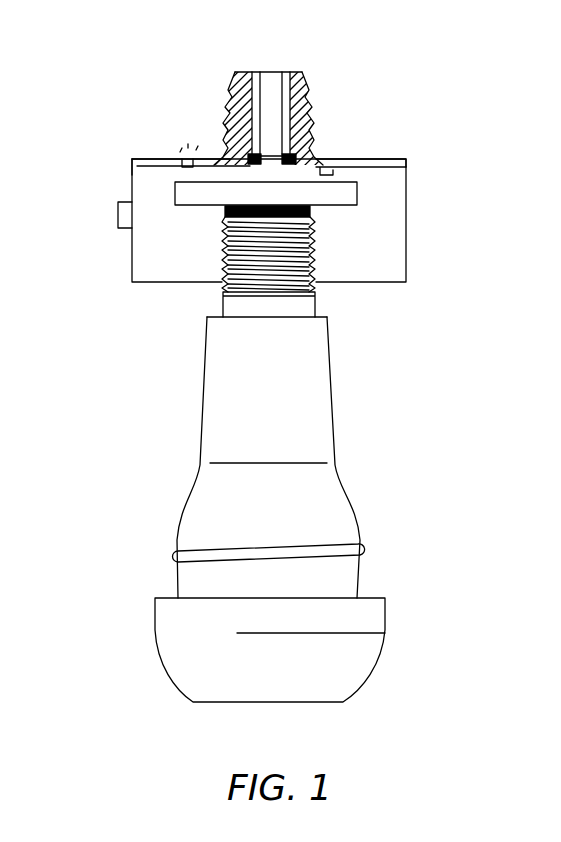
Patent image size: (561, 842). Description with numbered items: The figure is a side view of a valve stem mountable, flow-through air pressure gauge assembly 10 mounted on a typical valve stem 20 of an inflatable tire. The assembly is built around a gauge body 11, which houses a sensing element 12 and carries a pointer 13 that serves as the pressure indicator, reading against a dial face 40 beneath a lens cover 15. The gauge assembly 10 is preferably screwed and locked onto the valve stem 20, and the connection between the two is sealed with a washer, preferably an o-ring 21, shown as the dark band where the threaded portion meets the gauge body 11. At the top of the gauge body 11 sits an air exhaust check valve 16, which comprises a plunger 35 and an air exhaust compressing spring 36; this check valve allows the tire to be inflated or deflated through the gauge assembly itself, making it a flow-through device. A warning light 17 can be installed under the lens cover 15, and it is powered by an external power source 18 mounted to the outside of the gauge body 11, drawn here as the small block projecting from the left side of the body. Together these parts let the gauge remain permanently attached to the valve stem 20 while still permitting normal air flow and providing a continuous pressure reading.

The air pressure gauge assembly 10 is at (400, 429).
The gauge body 11 is at (146, 250).
The sensing element 12 is at (357, 197).
The pointer 13 is at (380, 170).
The lens cover 15 is at (134, 159).
The air exhaust check valve 16 is at (298, 90).
The warning light 17 is at (182, 158).
The external power source 18 is at (117, 215).
The valve stem 20 is at (210, 438).
The o-ring 21 is at (312, 213).
The plunger 35 is at (275, 127).
The air exhaust compressing spring 36 is at (250, 155).
The dial face 40 is at (150, 168).